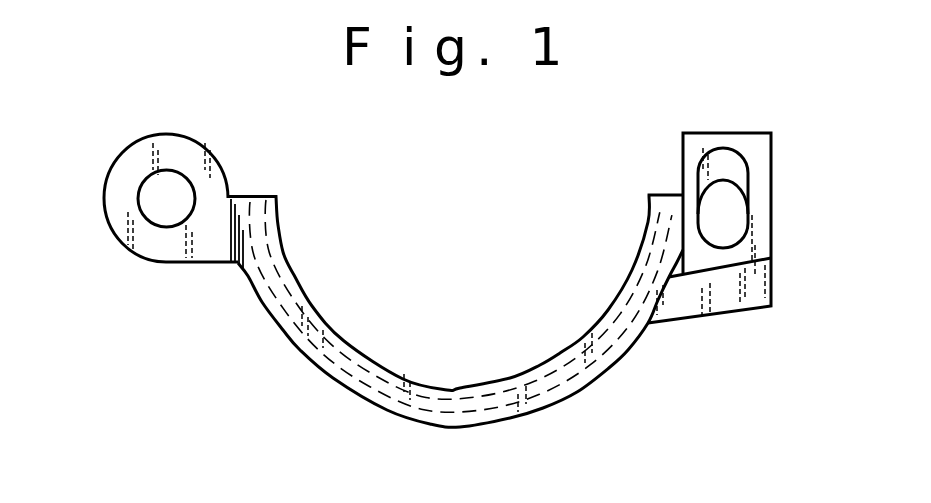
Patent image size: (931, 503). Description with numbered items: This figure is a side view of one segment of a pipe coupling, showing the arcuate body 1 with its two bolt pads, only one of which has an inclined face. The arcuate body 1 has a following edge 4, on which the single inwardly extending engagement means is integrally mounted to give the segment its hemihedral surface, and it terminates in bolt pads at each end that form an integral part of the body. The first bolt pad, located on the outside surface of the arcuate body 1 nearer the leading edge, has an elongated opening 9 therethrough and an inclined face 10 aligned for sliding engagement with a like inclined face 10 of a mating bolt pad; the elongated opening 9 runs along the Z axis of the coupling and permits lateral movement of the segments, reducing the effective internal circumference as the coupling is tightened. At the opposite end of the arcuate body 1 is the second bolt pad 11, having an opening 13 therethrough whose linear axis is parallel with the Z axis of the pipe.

The arcuate body 1 is at (245, 403).
The following edge 4 is at (570, 440).
The elongated opening 9 is at (734, 218).
The inclined face 10 is at (773, 236).
The second bolt pad 11 is at (107, 215).
The opening 13 is at (176, 189).